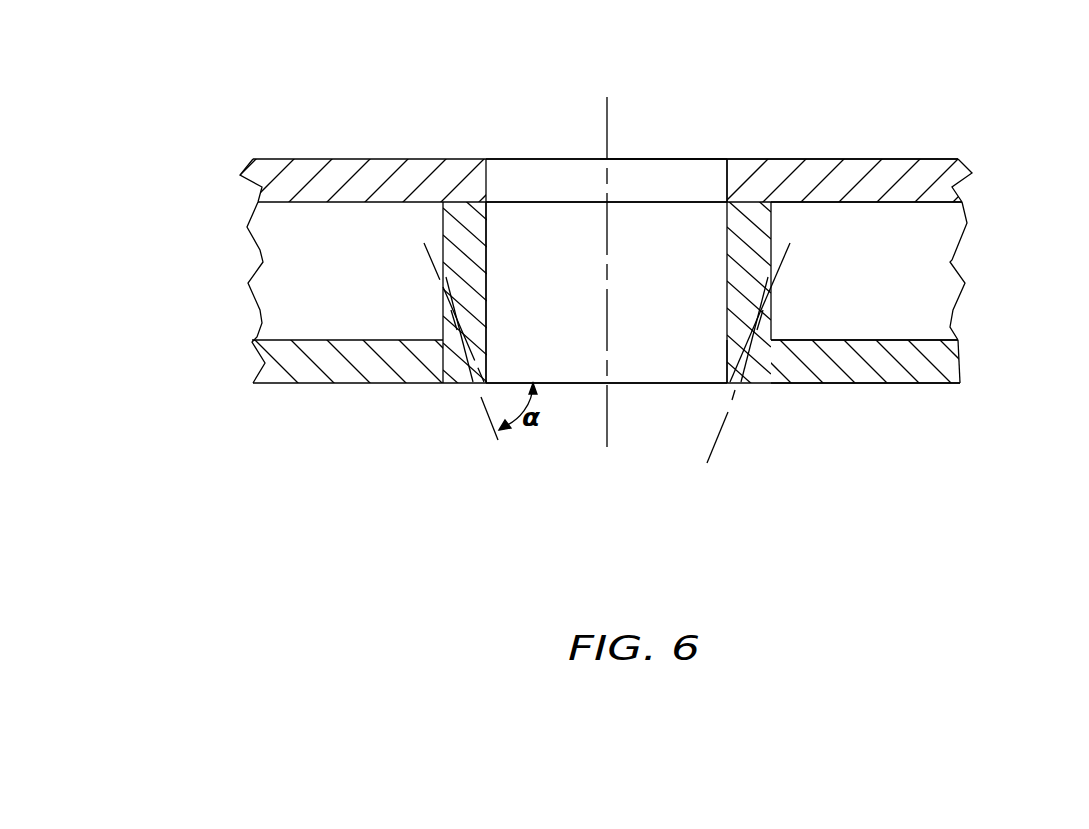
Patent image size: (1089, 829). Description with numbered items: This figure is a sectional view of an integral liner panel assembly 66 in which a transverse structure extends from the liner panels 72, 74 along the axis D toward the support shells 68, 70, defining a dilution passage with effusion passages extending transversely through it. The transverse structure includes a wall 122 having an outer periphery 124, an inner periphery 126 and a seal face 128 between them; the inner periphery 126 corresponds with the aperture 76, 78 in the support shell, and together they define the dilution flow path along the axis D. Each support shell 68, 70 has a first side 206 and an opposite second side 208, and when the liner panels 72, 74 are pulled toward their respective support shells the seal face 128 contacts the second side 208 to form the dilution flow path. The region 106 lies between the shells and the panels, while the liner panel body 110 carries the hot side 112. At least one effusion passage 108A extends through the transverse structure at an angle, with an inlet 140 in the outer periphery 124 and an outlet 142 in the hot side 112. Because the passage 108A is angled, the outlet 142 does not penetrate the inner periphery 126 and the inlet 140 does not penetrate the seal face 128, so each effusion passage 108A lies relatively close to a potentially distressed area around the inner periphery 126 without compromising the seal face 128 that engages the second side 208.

The fastener assembly 66 is at (658, 557).
The support shell 68 is at (604, 138).
The support shell 70 is at (912, 172).
The liner panel 72 is at (645, 343).
The liner panel 74 is at (938, 362).
The aperture 76 is at (606, 207).
The aperture 78 is at (622, 60).
The spacer wall 106 is at (290, 257).
The effusion passage 108A is at (462, 382).
The second plate body 110 is at (865, 340).
The hot side 112 is at (840, 384).
The wall 122 is at (758, 225).
The outer periphery 124 is at (443, 202).
The inner periphery 126 is at (486, 322).
The seal face 128 is at (750, 202).
The inlet 140 is at (441, 298).
The outlet 142 is at (477, 384).
The first side 206 is at (957, 160).
The second side 208 is at (935, 203).
The axis D is at (607, 128).